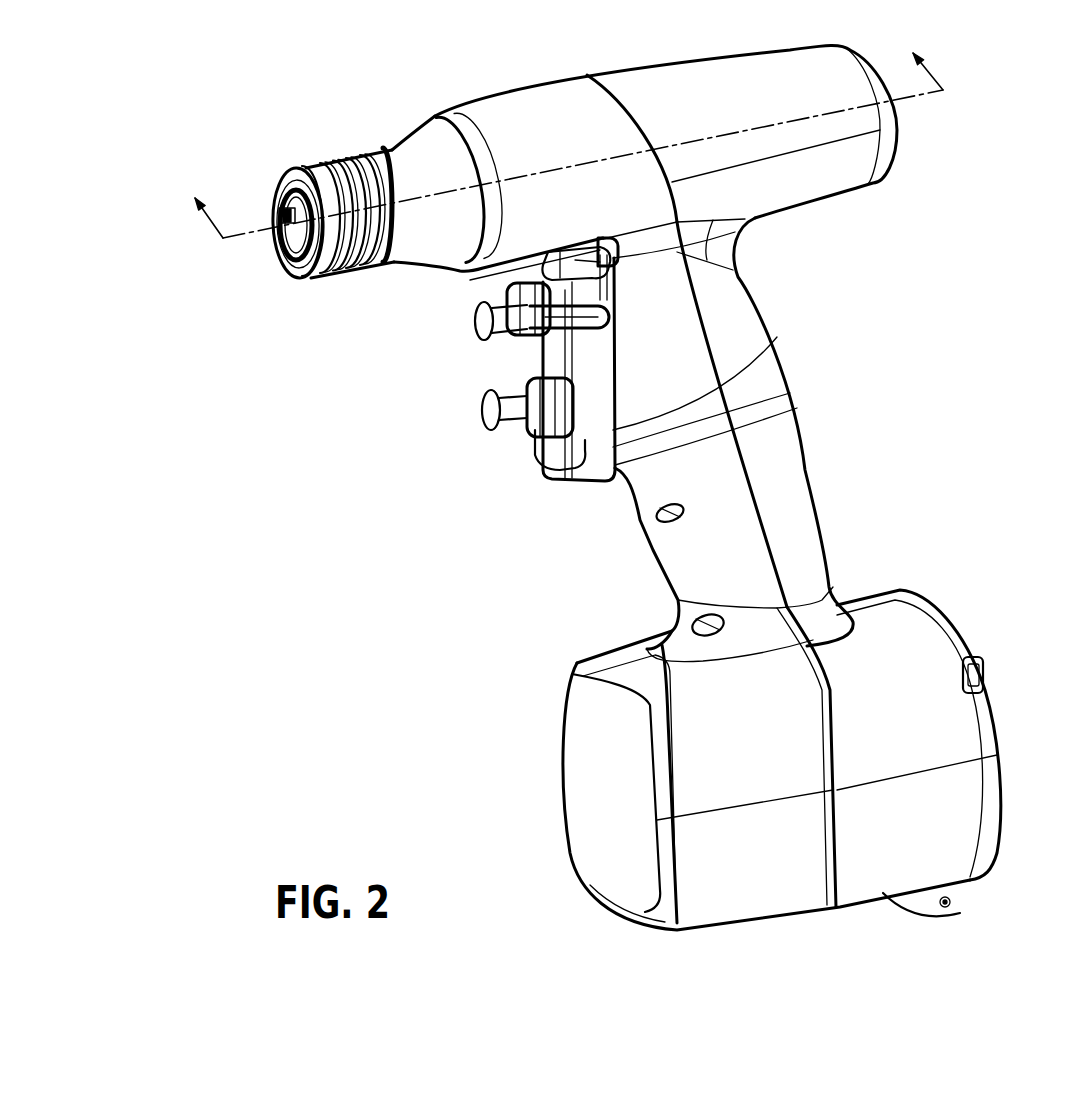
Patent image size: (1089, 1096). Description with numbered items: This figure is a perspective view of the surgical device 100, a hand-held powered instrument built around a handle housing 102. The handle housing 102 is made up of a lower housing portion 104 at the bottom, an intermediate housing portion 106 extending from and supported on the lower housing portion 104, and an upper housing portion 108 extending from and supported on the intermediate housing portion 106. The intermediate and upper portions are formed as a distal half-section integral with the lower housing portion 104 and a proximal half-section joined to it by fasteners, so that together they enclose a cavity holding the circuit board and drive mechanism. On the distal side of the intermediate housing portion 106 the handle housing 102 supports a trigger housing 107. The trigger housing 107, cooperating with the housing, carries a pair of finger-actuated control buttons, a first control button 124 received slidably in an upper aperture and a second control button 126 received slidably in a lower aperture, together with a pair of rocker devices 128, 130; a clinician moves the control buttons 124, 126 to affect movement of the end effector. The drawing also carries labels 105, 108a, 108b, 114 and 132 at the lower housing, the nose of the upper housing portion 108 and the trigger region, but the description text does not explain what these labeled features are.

The surgical device 100 is at (340, 83).
The handle housing 102 is at (883, 66).
The lower housing portion 104 is at (568, 760).
The battery release latch 105 is at (950, 600).
The intermediate housing portion 106 is at (797, 398).
The trigger housing 107 is at (570, 487).
The upper housing portion 108 is at (905, 153).
The nose end 108a is at (286, 170).
The coupling socket 108b is at (293, 233).
The collar 114 is at (387, 148).
The first control button 124 is at (472, 321).
The second control button 126 is at (480, 414).
The rocker device 128 is at (525, 335).
The rocker device 130 is at (530, 443).
The clip 132 is at (560, 267).